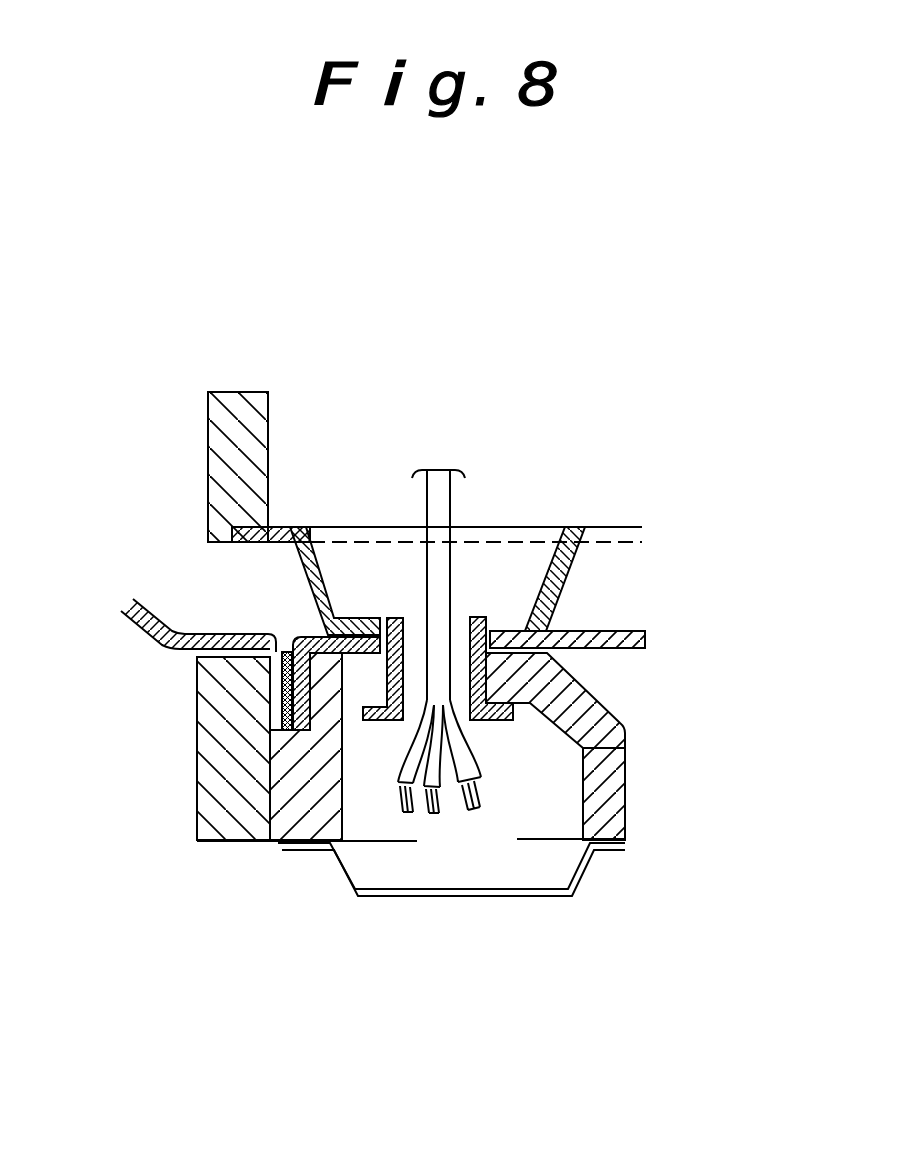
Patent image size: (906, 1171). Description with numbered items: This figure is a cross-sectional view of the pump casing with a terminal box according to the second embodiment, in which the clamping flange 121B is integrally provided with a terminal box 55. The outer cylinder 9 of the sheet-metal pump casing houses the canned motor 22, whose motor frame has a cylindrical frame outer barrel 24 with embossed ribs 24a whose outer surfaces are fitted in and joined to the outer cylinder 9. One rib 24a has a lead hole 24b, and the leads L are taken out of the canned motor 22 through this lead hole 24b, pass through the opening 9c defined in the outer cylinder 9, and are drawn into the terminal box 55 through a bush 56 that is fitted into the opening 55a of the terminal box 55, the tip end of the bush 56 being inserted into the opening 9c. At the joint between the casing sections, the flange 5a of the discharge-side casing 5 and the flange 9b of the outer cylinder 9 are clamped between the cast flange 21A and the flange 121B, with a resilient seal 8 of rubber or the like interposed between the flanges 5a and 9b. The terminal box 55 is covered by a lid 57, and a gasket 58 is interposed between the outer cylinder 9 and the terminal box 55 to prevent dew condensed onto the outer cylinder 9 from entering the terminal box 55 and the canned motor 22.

The canned motor 22 is at (208, 430).
The frame outer barrel 24 is at (625, 540).
The rib 24a is at (573, 590).
The lead hole 24b is at (490, 630).
The outer cylinder 9 is at (605, 648).
The flange 9b is at (287, 735).
The opening 9c is at (412, 617).
The resilient seal 8 is at (240, 632).
The discharge-side casing 5 is at (142, 640).
The flange 5a is at (246, 809).
The flange 21A is at (225, 783).
The flange 121B is at (283, 833).
The gasket 58 is at (357, 722).
The lid 57 is at (466, 900).
The terminal box 55 is at (598, 773).
The opening 55a is at (468, 738).
The bush 56 is at (608, 745).
The leads L is at (440, 583).